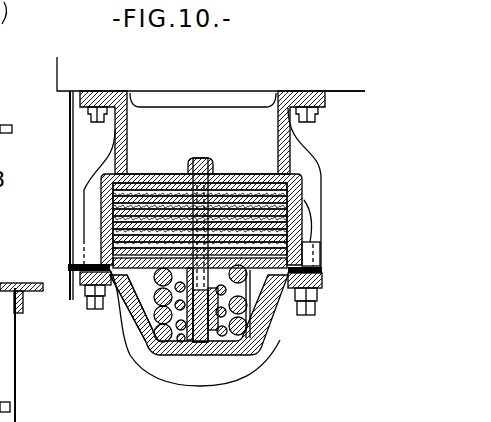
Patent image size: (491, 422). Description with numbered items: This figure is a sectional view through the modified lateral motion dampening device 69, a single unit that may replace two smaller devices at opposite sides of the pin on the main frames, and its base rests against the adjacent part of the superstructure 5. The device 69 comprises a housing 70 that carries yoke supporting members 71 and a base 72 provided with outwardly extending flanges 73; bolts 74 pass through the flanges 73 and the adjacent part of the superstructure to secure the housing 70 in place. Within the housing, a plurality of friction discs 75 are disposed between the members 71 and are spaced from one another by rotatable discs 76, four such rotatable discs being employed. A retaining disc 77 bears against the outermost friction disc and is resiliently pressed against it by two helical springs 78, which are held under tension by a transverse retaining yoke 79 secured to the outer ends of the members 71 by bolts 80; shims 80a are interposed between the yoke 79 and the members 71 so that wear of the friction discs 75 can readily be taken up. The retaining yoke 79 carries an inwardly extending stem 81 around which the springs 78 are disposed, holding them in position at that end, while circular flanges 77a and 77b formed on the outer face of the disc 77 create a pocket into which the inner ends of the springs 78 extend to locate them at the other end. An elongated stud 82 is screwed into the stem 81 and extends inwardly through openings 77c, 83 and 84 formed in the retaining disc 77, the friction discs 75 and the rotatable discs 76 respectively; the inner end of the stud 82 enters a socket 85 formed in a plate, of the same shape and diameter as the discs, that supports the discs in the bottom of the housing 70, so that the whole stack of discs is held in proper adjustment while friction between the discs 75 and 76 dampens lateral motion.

The mounting plate 5 is at (58, 81).
The lateral motion dampening device 69 is at (180, 115).
The housing 70 is at (287, 157).
The yoke supporting members 71 is at (320, 253).
The base 72 is at (285, 93).
The flanges 73 is at (333, 95).
The bolts 74 is at (88, 114).
The friction discs 75 is at (102, 240).
The rotatable discs 76 is at (307, 240).
The retaining disc 77 is at (288, 313).
The circular flange 77a is at (255, 265).
The circular flange 77b is at (257, 268).
The opening 77c is at (275, 313).
The helical springs 78 is at (226, 355).
The retaining yoke 79 is at (118, 322).
The bolts 80 is at (90, 312).
The shims 80a is at (78, 266).
The stem 81 is at (187, 362).
The elongated stud 82 is at (214, 170).
The openings 83 is at (122, 318).
The openings 84 is at (180, 175).
The socket 85 is at (203, 167).